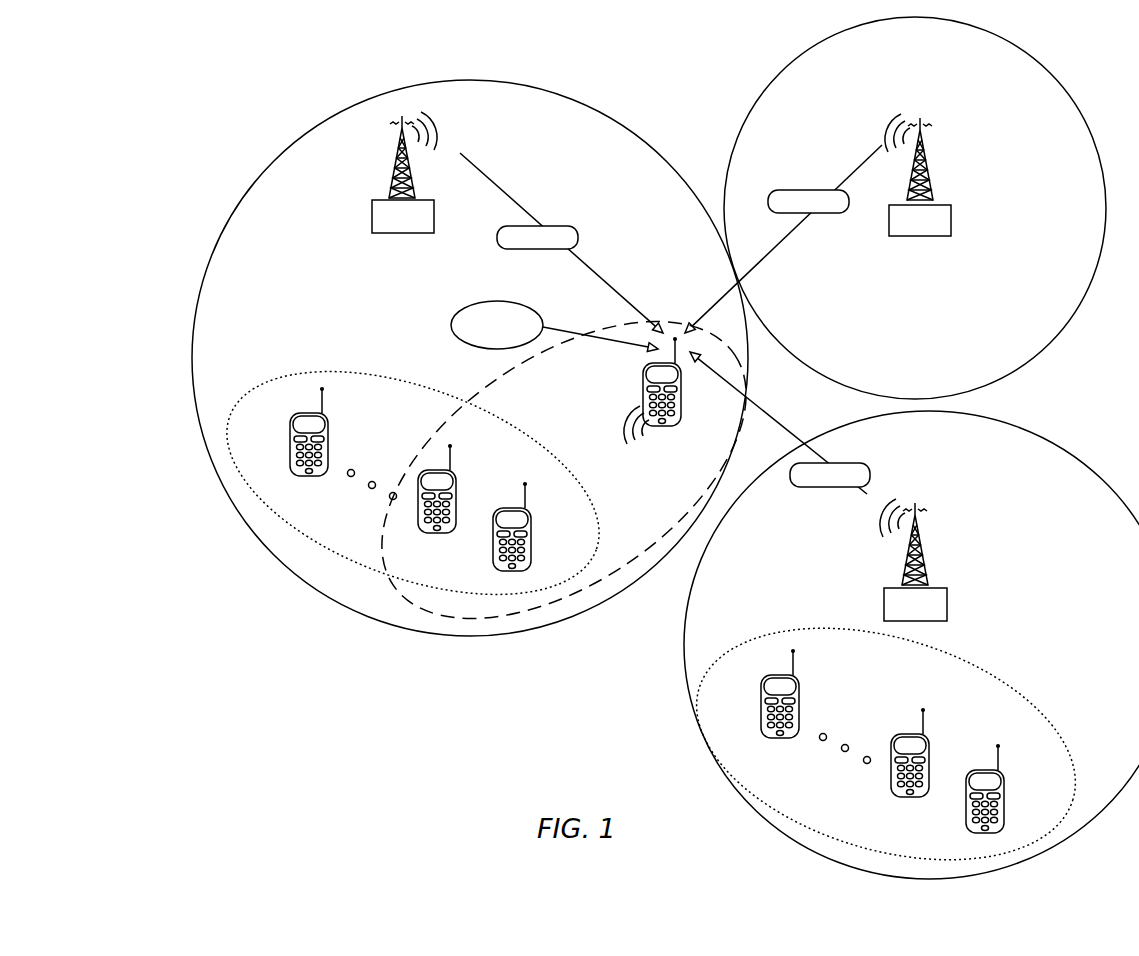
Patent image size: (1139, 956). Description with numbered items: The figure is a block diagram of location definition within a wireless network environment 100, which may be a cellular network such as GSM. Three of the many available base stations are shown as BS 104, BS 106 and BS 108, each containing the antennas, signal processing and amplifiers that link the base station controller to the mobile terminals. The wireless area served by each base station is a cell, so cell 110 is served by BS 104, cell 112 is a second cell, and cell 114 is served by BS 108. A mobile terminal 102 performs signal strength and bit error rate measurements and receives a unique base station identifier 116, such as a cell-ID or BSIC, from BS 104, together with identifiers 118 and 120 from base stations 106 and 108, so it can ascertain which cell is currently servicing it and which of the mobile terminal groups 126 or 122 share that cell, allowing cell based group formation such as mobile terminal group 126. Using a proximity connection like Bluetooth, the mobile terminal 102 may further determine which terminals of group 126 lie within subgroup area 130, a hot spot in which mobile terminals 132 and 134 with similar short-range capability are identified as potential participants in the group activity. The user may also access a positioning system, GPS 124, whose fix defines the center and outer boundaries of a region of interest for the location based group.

The wireless network environment 100 is at (223, 96).
The mobile terminal 102 is at (660, 427).
The base station 104 is at (434, 215).
The base station 106 is at (904, 237).
The base station 108 is at (947, 604).
The cell 110 is at (564, 93).
The cell 112 is at (1043, 63).
The cell 114 is at (1035, 428).
The base station identifier 116 is at (537, 250).
The base station identifier 118 is at (811, 190).
The base station identifier 120 is at (847, 462).
The mobile terminal group 122 is at (1009, 706).
The GPS 124 is at (529, 303).
The mobile terminal group 126 is at (332, 372).
The subgroup area 130 is at (495, 388).
The mobile terminal 132 is at (532, 536).
The mobile terminal 134 is at (453, 527).